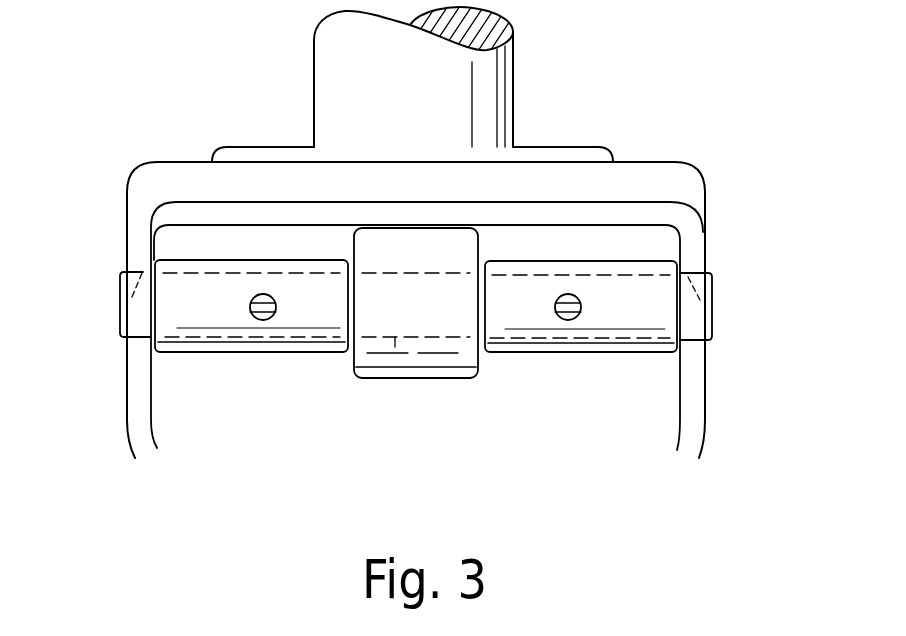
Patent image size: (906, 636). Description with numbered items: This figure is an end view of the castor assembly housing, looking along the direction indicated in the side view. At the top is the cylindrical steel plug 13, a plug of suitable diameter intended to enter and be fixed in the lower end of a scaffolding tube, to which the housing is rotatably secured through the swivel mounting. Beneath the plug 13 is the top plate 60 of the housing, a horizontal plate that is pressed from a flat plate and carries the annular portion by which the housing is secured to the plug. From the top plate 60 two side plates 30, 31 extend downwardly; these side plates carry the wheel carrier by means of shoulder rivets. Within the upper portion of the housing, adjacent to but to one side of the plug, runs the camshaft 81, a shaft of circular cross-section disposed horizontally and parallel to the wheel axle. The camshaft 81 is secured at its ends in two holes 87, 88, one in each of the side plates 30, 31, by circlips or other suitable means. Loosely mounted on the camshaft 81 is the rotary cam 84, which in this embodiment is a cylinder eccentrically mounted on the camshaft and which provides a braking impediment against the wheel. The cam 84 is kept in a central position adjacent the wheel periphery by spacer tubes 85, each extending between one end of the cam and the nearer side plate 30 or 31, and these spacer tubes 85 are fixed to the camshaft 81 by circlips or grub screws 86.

The cylindrical steel plug 13 is at (482, 117).
The side plate 30 is at (692, 413).
The side plate 31 is at (137, 372).
The top plate 60 is at (630, 215).
The camshaft 81 is at (653, 273).
The rotary cam 84 is at (427, 362).
The spacer tube 85 is at (313, 345).
The grub screw 86 is at (263, 318).
The hole 87 is at (125, 305).
The hole 88 is at (707, 310).